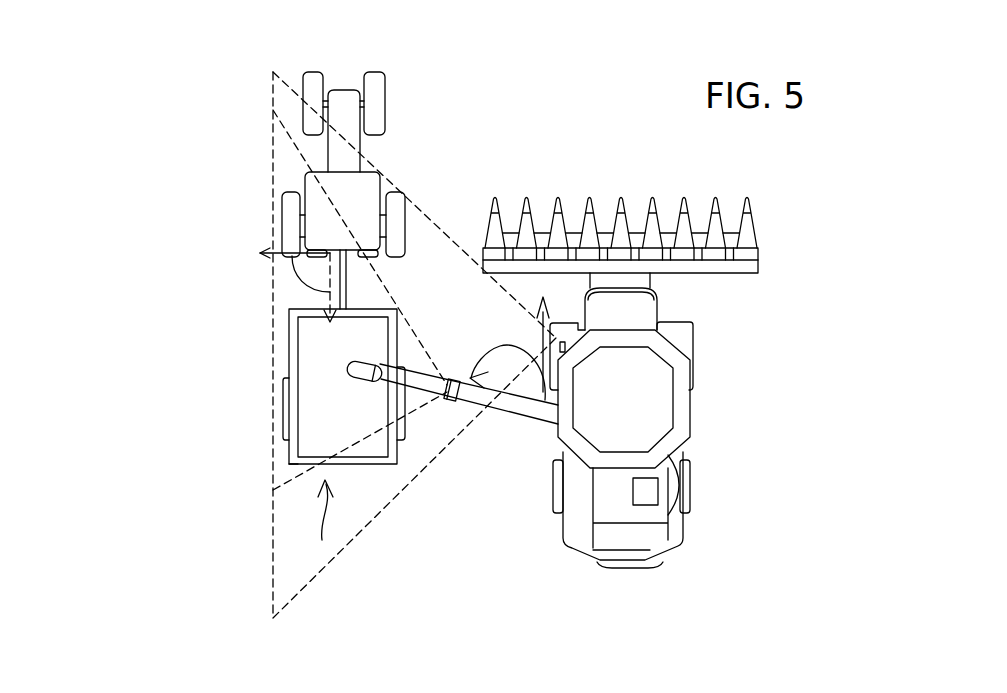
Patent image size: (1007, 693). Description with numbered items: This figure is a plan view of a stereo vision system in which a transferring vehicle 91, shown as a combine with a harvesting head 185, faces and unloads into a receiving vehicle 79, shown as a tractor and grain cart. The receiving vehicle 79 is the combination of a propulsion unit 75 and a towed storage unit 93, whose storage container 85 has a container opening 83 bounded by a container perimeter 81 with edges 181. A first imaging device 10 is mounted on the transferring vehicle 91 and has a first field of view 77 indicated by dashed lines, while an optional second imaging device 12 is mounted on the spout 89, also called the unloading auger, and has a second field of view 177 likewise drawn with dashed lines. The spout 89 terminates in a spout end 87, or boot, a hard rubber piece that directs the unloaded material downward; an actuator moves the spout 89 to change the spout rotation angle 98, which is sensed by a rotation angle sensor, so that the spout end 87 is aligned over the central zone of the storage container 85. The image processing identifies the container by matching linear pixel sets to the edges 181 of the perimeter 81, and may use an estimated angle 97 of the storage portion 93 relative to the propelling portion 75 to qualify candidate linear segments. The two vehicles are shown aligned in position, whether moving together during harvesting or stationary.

The propulsion unit 75 is at (344, 97).
The estimated angle 97 is at (300, 282).
The receiving vehicle 79 is at (262, 316).
The container opening 83 is at (322, 390).
The container perimeter 81 is at (388, 347).
The edges 181 is at (394, 327).
The storage container 85 is at (292, 466).
The spout end 87 is at (352, 368).
The spout 89 is at (527, 414).
The second imaging device 12 is at (452, 381).
The second field of view 177 is at (298, 472).
The first field of view 77 is at (377, 518).
The storage unit 93 is at (316, 524).
The spout rotation angle 98 is at (507, 350).
The first imaging device 10 is at (562, 340).
The transferring vehicle 91 is at (692, 416).
The harvesting head 185 is at (751, 230).